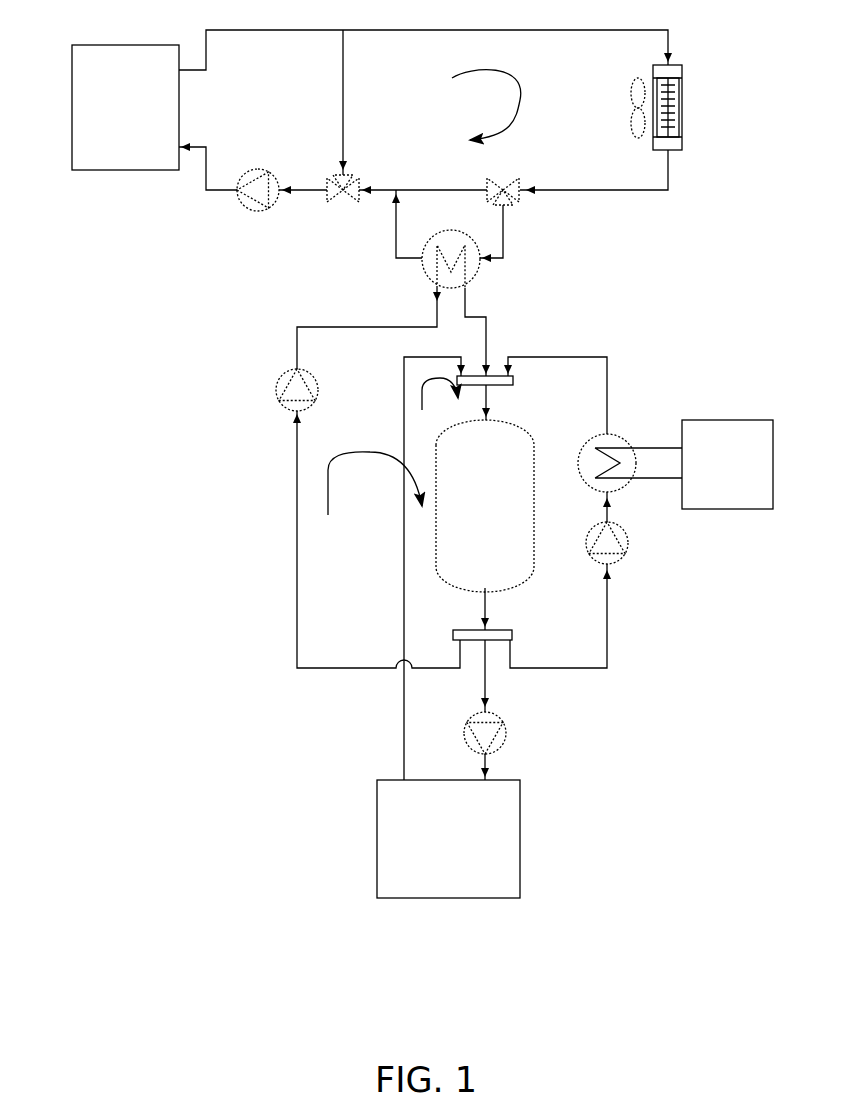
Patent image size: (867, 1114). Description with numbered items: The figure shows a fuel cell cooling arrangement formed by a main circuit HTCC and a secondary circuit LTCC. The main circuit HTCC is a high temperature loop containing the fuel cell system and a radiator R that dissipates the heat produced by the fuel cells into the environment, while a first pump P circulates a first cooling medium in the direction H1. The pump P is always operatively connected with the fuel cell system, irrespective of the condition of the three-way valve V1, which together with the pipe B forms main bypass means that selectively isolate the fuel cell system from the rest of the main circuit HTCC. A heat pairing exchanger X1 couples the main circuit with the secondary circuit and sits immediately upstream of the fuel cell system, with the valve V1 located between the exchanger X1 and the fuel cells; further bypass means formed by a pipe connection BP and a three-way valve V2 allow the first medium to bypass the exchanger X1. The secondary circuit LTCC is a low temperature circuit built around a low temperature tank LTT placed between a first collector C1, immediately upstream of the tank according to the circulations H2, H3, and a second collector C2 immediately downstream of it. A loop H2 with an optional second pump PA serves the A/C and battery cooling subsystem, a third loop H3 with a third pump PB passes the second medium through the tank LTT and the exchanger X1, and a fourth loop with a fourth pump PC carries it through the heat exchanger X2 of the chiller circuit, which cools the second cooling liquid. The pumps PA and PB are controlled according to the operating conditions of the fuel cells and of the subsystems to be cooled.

The main circuit (high temperature cooling circuit) HTCC is at (205, 228).
The secondary circuit (low temperature cooling circuit) LTCC is at (247, 715).
The bypass pipe of main bypass means B is at (343, 97).
The three-way valve of main bypass means V1 is at (350, 177).
The three-way valve of bypass means V2 is at (503, 183).
The orientation of first cooling medium circulation H1 is at (486, 105).
The first loop circulation of secondary circuit H2 is at (441, 408).
The third loop circulation of secondary circuit H3 is at (375, 484).
The pipe connection of bypass means BP is at (437, 188).
The radiator R is at (682, 105).
The first pump P is at (270, 207).
The heat pairing exchanger X1 is at (512, 269).
The heat exchanger of chiller circuit X2 is at (634, 425).
The first collector C1 is at (495, 375).
The second collector C2 is at (510, 633).
The low temperature tank LTT is at (485, 506).
The third circulation pump PB is at (282, 403).
The fourth pump PC is at (622, 557).
The second pump PA is at (505, 737).